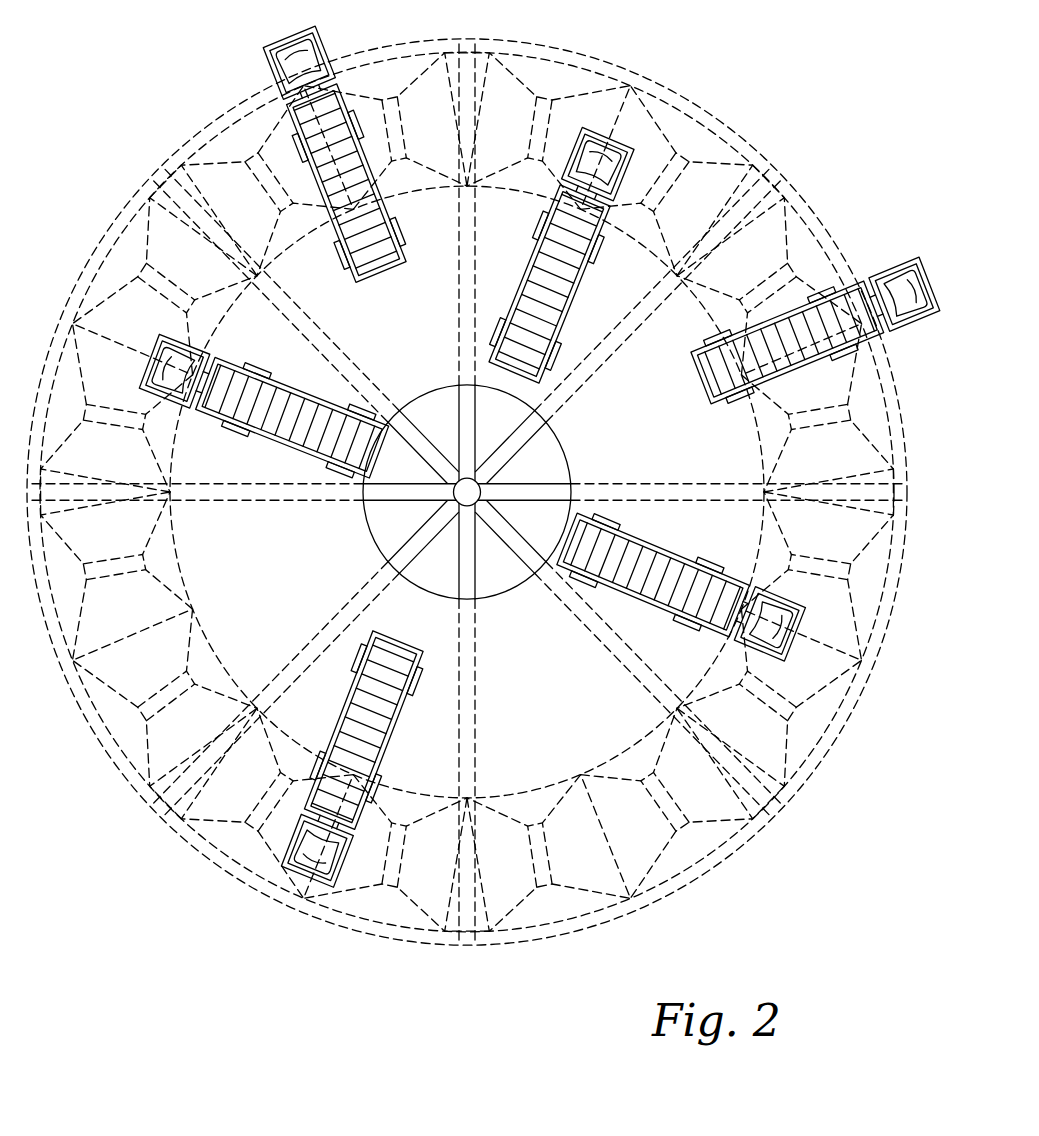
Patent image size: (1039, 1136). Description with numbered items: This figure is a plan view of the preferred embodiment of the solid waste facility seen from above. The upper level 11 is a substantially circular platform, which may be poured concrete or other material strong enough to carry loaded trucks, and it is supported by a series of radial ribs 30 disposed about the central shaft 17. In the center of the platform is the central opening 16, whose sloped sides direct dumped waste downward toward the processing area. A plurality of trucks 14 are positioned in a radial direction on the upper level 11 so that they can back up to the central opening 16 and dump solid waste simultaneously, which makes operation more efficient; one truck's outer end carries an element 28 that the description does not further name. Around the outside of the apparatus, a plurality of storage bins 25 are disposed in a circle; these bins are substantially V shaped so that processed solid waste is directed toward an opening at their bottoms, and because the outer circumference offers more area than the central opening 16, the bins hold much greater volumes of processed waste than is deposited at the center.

The top level 11 is at (812, 772).
The trucks 14 is at (384, 256).
The central opening 16 is at (505, 578).
The central shaft 17 is at (476, 470).
The storage bins 25 is at (467, 492).
The headrest 28 is at (922, 262).
The radial ribs 30 is at (548, 487).